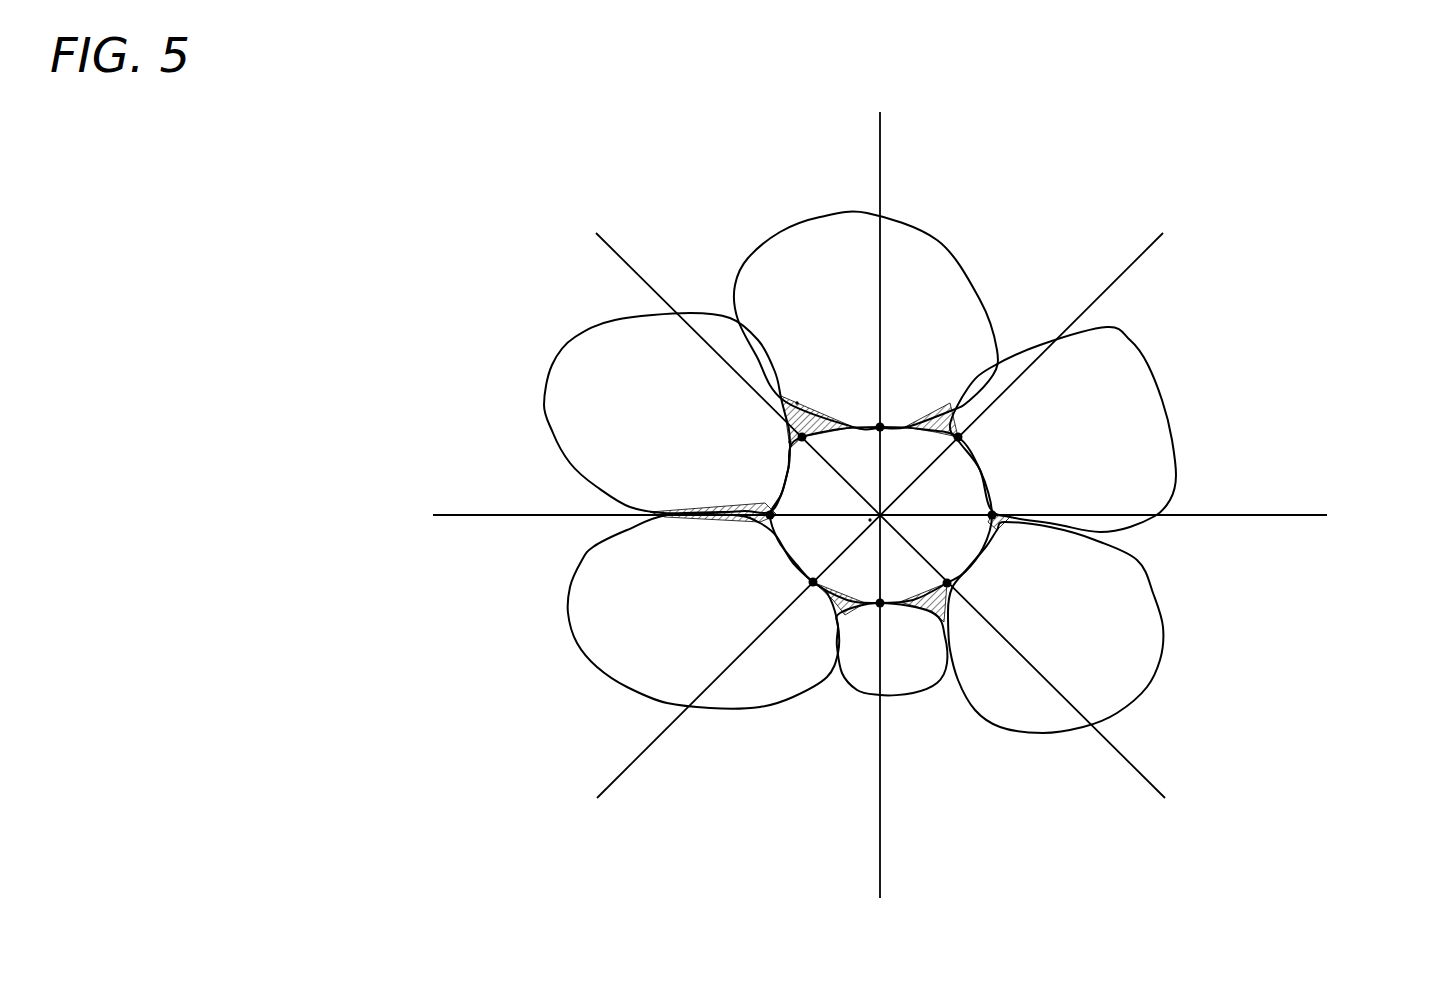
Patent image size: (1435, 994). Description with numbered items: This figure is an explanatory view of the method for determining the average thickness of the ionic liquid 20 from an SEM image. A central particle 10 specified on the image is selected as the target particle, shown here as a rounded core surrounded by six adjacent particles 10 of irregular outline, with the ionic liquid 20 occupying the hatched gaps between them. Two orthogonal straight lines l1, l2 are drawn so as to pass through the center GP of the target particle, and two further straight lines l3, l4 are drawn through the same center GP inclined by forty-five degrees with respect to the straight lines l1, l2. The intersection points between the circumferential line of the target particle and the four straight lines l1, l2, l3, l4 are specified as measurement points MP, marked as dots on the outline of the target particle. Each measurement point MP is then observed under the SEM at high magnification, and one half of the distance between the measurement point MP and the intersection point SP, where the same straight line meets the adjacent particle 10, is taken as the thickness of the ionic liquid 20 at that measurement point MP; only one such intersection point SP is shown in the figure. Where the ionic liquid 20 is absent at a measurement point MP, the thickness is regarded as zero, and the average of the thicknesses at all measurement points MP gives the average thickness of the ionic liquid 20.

The particle 10 is at (967, 550).
The ionic liquid 20 is at (946, 617).
The intersection point SP is at (797, 403).
The measurement point MP is at (790, 442).
The center GP is at (870, 520).
The straight line l1 is at (881, 150).
The straight line l2 is at (1282, 517).
The straight line l3 is at (1150, 248).
The straight line l4 is at (1140, 780).